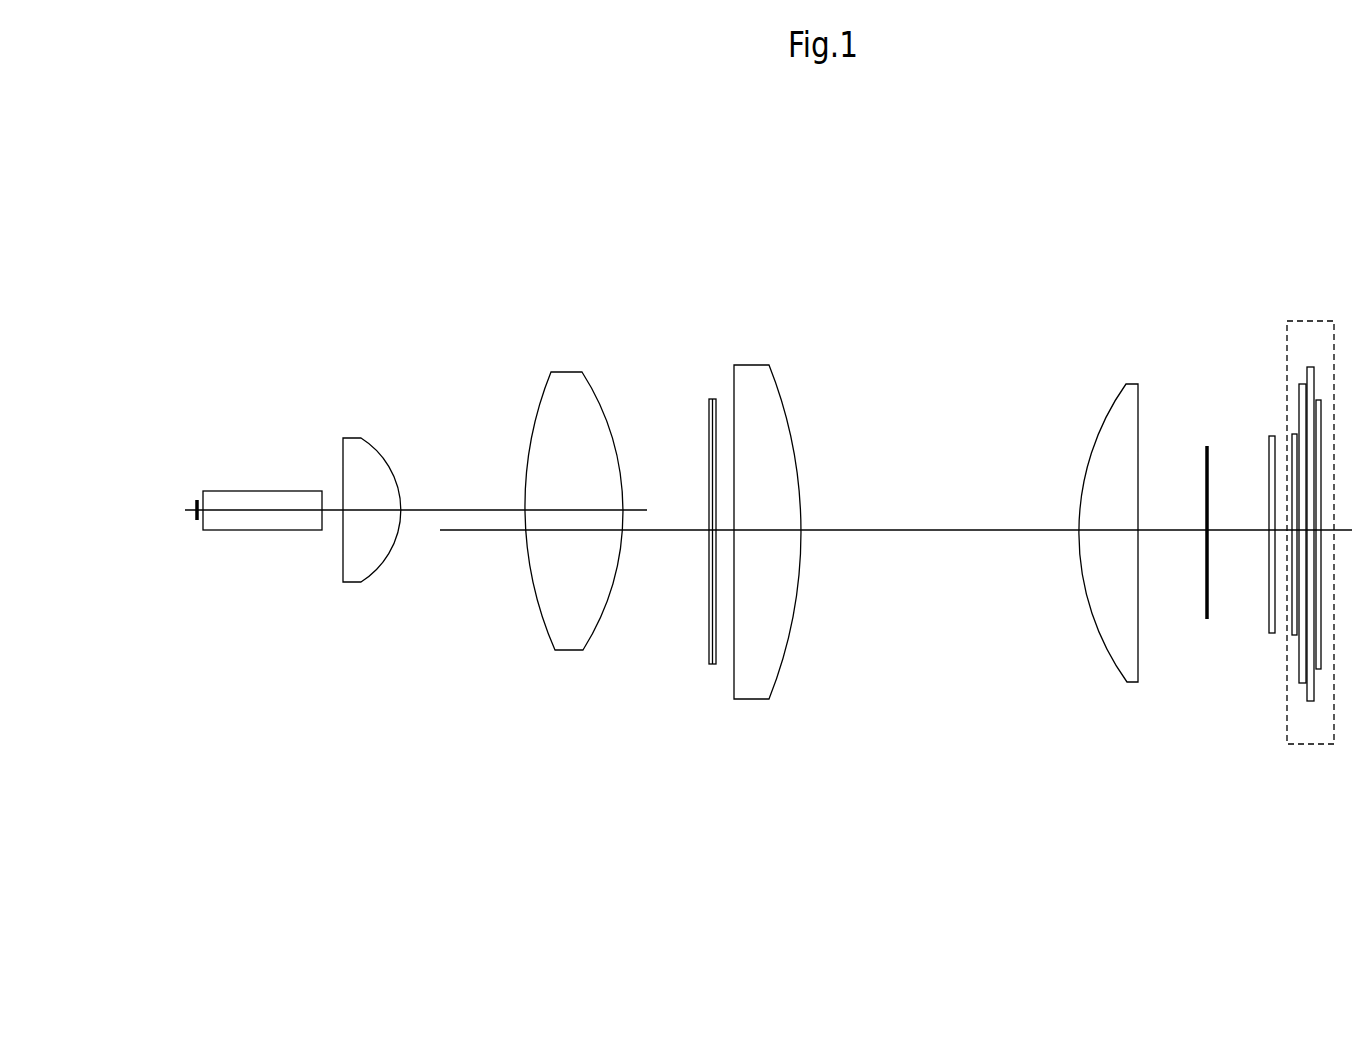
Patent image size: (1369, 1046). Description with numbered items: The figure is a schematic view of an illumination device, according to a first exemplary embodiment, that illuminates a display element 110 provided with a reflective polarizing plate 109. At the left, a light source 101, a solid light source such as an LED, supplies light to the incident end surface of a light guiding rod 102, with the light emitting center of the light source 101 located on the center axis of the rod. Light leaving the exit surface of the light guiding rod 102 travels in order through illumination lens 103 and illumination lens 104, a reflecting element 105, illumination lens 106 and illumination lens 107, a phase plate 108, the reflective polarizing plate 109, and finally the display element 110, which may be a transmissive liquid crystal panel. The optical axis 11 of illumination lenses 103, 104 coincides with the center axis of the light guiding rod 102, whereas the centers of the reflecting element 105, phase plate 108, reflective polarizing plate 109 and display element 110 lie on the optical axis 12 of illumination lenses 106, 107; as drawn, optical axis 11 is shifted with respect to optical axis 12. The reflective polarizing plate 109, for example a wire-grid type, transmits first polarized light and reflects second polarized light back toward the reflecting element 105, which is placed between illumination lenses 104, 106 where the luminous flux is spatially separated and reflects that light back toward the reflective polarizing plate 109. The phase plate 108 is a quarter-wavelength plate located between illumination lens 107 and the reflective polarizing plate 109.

The optical axis 11 is at (427, 507).
The optical axis 12 is at (942, 536).
The light source 101 is at (197, 494).
The light guiding rod 102 is at (228, 522).
The illumination lens 103 is at (353, 581).
The illumination lens 104 is at (568, 643).
The reflecting element 105 is at (711, 399).
The illumination lens 106 is at (751, 690).
The illumination lens 107 is at (1132, 677).
The phase plate 108 is at (1207, 622).
The reflective polarizing plate 109 is at (1272, 437).
The display element 110 is at (1313, 331).